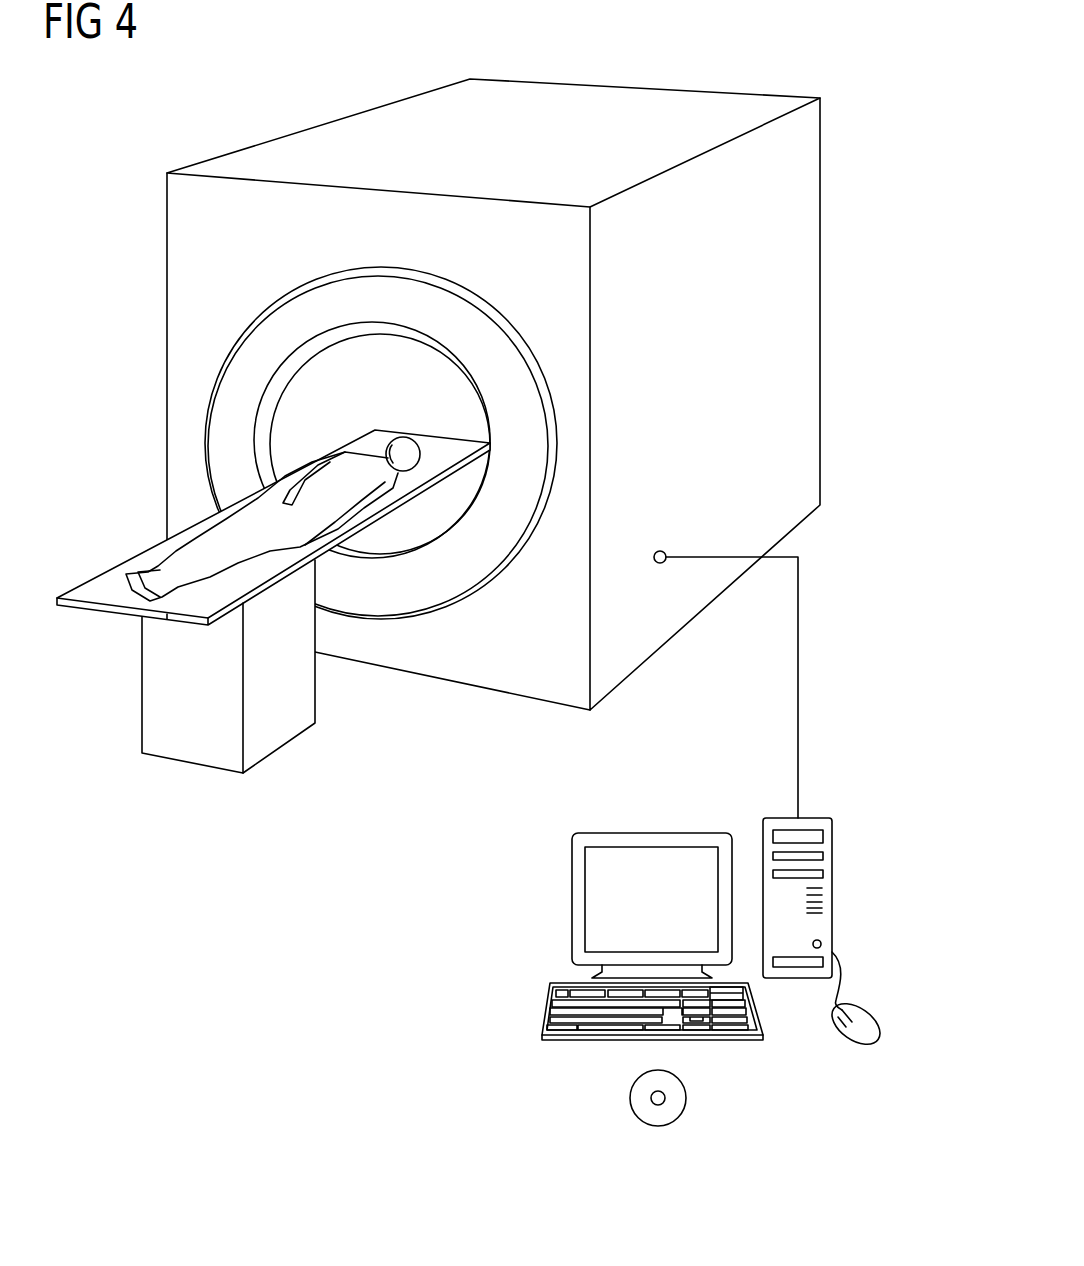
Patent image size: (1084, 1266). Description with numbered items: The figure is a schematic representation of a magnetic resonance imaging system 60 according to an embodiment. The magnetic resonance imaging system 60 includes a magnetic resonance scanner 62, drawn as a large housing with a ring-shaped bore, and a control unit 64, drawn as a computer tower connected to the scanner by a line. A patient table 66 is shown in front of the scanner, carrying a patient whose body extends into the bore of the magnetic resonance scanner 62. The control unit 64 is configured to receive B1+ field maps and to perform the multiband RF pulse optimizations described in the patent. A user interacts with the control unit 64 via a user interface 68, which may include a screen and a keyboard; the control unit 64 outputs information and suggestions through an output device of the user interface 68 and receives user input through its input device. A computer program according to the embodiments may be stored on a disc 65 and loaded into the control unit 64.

The magnetic resonance imaging system 60 is at (138, 251).
The magnetic resonance scanner 62 is at (626, 96).
The control unit 64 is at (864, 906).
The disc 65 is at (687, 1098).
The patient table 66 is at (177, 572).
The user interface 68 is at (538, 906).